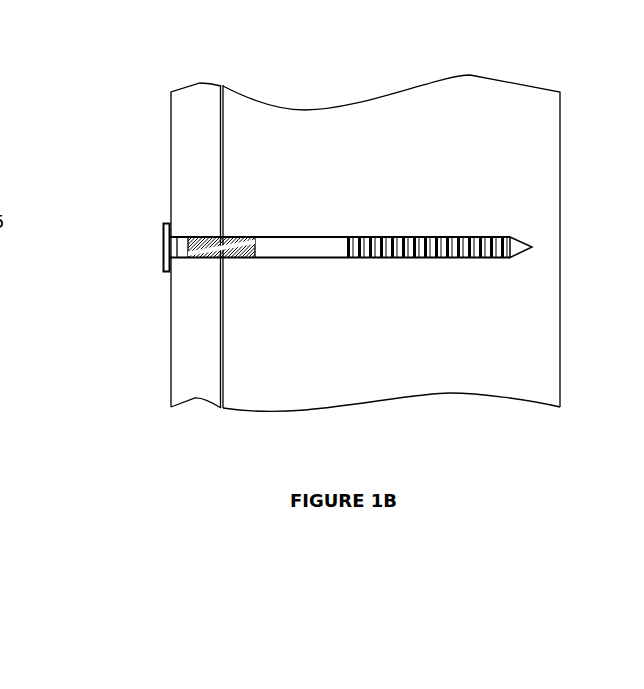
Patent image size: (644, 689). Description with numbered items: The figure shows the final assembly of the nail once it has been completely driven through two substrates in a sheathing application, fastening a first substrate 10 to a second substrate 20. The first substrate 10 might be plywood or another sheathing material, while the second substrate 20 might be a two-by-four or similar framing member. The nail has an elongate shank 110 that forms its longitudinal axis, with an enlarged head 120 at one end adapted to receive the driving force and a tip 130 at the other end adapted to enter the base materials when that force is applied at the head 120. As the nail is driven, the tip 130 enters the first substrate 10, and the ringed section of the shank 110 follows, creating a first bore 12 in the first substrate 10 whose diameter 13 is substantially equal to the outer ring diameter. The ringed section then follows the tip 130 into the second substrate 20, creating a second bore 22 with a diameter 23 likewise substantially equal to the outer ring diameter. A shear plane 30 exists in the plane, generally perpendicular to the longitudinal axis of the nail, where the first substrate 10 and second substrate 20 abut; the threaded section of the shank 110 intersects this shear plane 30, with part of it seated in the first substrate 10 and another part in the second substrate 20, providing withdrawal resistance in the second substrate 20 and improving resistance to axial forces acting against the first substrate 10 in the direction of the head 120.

The first substrate 10 is at (204, 384).
The second substrate 20 is at (378, 384).
The shear plane 30 is at (221, 85).
The shank 110 is at (333, 222).
The head 120 is at (163, 247).
The tip 130 is at (521, 252).
The first bore 12 is at (185, 236).
The diameter 13 is at (194, 286).
The second bore 22 is at (284, 236).
The diameter 23 is at (298, 286).